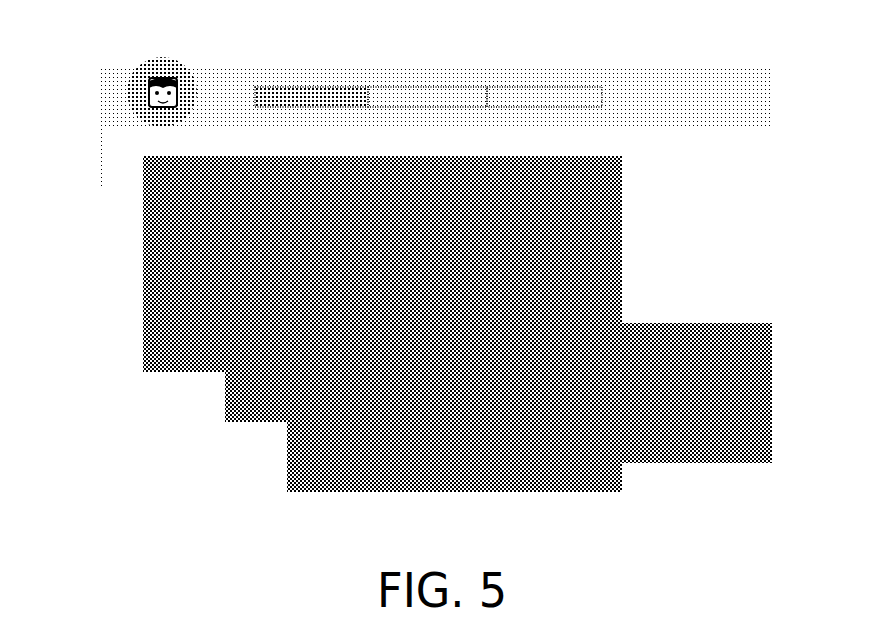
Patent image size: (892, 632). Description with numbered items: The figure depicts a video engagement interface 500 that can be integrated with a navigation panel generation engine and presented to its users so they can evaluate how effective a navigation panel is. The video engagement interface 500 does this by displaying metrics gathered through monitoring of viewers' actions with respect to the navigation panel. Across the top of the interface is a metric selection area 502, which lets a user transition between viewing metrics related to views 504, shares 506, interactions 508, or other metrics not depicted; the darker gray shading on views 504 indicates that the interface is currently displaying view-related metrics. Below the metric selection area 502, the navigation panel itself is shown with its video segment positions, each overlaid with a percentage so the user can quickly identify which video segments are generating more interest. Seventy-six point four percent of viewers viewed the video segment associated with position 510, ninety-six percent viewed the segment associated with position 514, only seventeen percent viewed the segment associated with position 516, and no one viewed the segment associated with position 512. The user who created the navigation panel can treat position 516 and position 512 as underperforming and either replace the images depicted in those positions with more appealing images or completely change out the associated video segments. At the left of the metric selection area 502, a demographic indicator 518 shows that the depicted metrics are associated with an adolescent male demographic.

The video engagement interface 500 is at (115, 37).
The metric selection area 502 is at (321, 68).
The views 504 is at (277, 107).
The shares 506 is at (390, 106).
The interactions 508 is at (510, 107).
The position 510 is at (143, 305).
The position 512 is at (232, 422).
The position 514 is at (442, 464).
The position 516 is at (643, 462).
The demographic indicator 518 is at (137, 115).